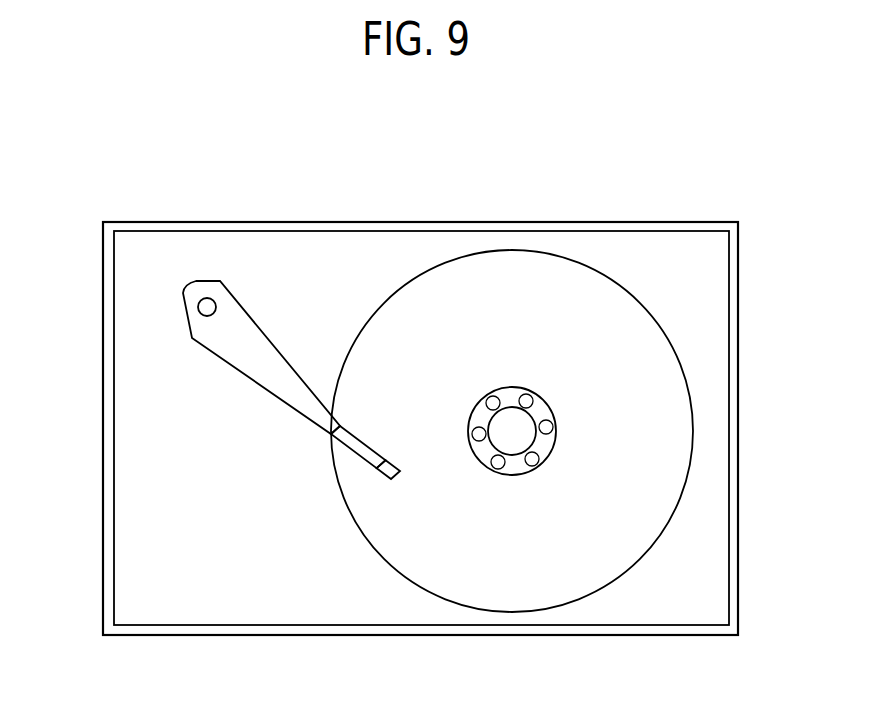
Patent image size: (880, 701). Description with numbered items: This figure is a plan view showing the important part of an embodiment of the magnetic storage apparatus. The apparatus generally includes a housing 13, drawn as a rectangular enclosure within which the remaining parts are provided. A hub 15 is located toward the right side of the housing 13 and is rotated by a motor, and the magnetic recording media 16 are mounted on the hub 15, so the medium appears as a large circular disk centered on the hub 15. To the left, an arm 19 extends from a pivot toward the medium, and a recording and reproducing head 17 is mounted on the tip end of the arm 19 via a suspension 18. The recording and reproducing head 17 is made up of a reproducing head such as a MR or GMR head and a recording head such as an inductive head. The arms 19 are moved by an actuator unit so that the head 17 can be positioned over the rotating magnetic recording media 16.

The housing 13 is at (729, 620).
The hub 15 is at (545, 410).
The magnetic recording media 16 is at (567, 275).
The recording and reproducing head 17 is at (400, 467).
The suspension 18 is at (363, 440).
The arm 19 is at (242, 372).